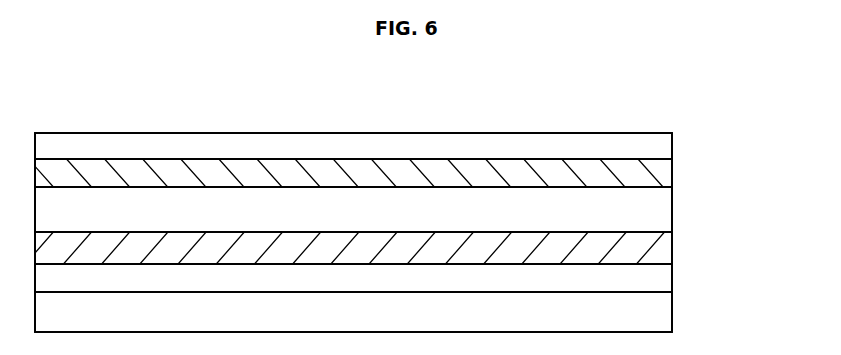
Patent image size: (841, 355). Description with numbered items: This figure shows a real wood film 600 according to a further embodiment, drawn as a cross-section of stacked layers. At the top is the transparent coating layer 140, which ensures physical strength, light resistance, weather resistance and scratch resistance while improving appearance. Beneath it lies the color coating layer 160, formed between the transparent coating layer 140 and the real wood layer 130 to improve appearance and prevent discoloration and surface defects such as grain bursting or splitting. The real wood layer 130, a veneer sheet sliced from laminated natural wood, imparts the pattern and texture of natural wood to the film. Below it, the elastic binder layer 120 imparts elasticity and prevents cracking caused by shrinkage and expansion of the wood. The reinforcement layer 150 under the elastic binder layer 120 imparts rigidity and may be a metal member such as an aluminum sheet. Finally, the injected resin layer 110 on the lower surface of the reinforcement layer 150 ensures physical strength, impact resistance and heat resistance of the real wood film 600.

The real wood film 600 is at (675, 91).
The injected resin layer 110 is at (653, 310).
The elastic binder layer 120 is at (653, 252).
The real wood layer 130 is at (653, 218).
The transparent coating layer 140 is at (653, 147).
The reinforcement layer 150 is at (653, 280).
The color coating layer 160 is at (653, 173).